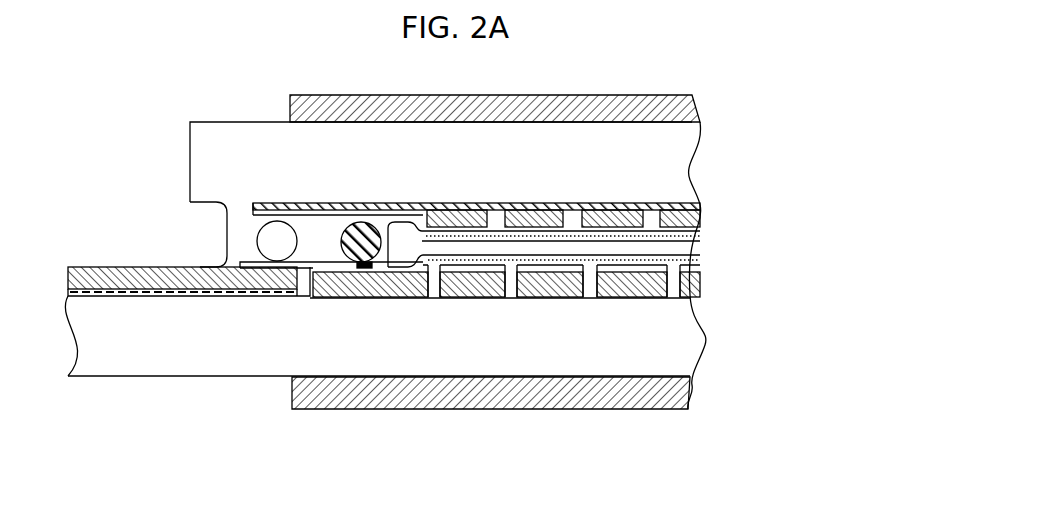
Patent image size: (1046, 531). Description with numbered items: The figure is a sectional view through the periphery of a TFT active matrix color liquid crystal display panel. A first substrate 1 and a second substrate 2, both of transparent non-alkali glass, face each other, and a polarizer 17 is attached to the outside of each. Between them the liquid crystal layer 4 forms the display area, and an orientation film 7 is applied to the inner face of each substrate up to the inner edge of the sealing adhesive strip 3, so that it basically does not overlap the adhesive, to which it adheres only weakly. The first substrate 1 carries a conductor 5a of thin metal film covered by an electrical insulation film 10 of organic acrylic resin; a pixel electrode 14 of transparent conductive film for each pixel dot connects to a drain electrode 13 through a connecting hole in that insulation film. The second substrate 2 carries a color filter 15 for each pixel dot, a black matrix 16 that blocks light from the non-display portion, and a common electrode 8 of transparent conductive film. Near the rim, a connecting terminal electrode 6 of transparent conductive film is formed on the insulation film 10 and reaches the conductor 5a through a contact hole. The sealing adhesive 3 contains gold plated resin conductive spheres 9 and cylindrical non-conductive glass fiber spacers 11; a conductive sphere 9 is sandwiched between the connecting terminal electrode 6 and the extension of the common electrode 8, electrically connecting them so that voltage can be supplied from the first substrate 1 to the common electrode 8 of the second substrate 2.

The first substrate 1 is at (670, 353).
The second substrate 2 is at (252, 150).
The sealing adhesive strip 3 is at (325, 255).
The liquid crystal layer 4 is at (686, 251).
The conductor 5a is at (175, 297).
The connecting terminal electrode 6 is at (365, 265).
The orientation film 7 is at (698, 243).
The common electrode 8 is at (252, 215).
The conductive sphere 9 is at (345, 255).
The electrical insulation film 10 is at (125, 268).
The glass fiber spacer 11 is at (278, 242).
The drain electrode 13 is at (436, 274).
The pixel electrode 14 is at (470, 272).
The color filter 15 is at (705, 208).
The black matrix 16 is at (252, 203).
The polarizer 17 is at (693, 107).